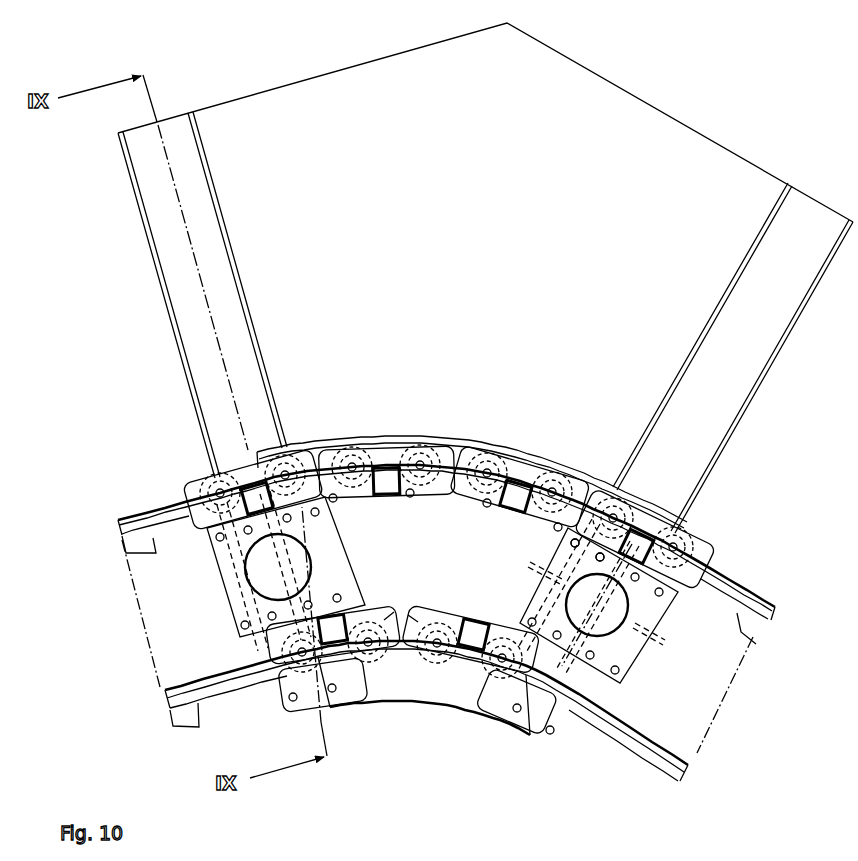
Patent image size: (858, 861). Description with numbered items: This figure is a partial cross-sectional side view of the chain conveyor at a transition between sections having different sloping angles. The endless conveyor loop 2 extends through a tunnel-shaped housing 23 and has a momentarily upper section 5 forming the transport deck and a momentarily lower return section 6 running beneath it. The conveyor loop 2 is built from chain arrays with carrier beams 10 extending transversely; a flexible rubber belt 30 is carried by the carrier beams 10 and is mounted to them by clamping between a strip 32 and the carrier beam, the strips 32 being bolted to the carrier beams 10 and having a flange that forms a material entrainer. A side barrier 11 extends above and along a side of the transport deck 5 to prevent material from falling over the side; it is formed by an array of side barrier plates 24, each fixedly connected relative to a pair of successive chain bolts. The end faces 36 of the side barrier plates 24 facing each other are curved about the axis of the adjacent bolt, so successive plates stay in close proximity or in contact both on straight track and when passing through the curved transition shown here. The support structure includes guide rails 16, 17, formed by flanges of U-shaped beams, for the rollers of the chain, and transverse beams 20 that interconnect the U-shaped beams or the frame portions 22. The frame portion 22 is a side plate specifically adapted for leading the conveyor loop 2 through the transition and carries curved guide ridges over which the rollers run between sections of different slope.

The conveyor loop 2 is at (719, 548).
The upper section 5 is at (443, 460).
The lower return section 6 is at (393, 655).
The carrier beam 10 is at (367, 605).
The side barrier 11 is at (510, 457).
The guide rail 16 is at (120, 563).
The guide rail 17 is at (198, 727).
The transverse beam 20 is at (250, 575).
The frame portion 22 is at (423, 688).
The tunnel-shaped housing 23 is at (494, 297).
The side barrier plate 24 is at (303, 449).
The rubber belt 30 is at (762, 602).
The strip 32 is at (373, 467).
The end face 36 is at (414, 622).